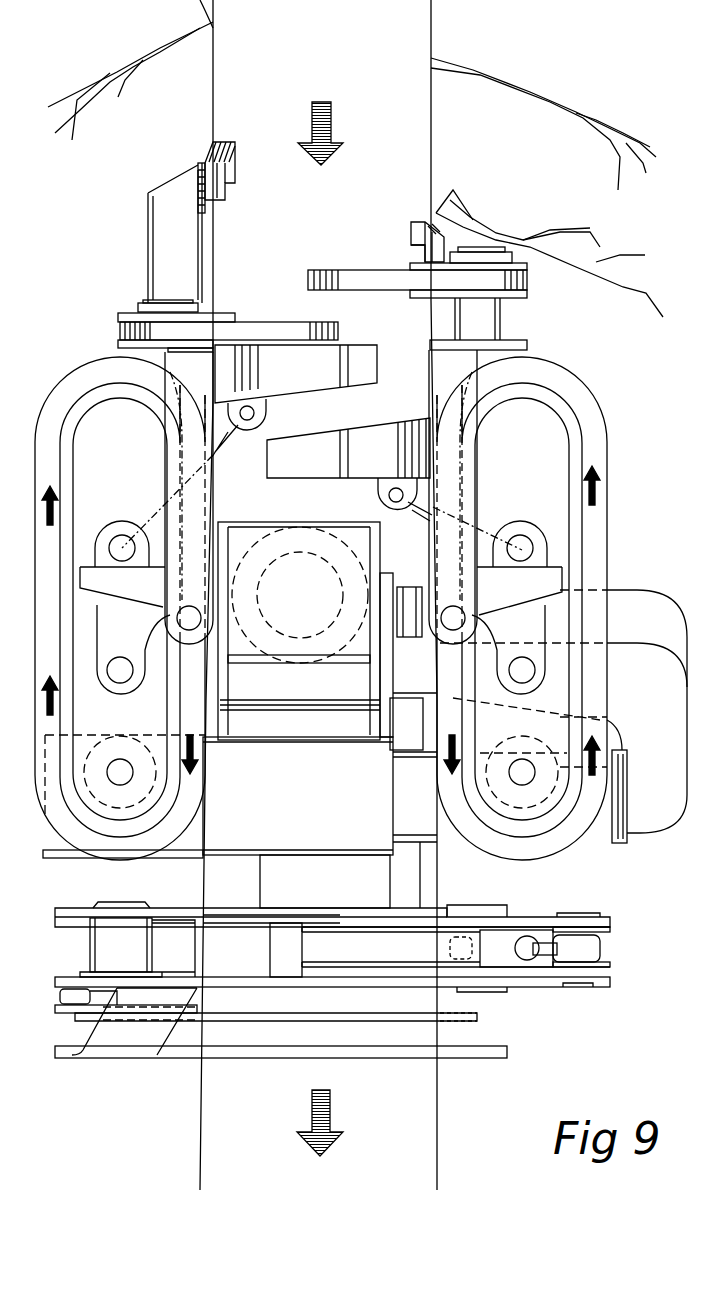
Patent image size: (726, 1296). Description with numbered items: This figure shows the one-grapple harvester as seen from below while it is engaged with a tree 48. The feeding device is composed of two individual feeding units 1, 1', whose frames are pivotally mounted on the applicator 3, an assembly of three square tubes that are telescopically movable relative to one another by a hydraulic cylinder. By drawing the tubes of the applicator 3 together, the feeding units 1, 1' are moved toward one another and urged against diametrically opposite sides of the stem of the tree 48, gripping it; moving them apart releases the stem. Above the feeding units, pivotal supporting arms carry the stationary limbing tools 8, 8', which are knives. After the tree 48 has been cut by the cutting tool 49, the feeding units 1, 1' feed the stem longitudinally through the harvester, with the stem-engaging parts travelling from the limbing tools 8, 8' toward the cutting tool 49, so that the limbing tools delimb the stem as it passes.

The feeding unit 1 is at (124, 593).
The feeding unit 1' is at (542, 605).
The applicator 3 is at (176, 862).
The stationary limbing tool 8 is at (205, 163).
The stationary limbing tool 8' is at (459, 217).
The tree 48 is at (425, 1107).
The cutting tool 49 is at (253, 1018).